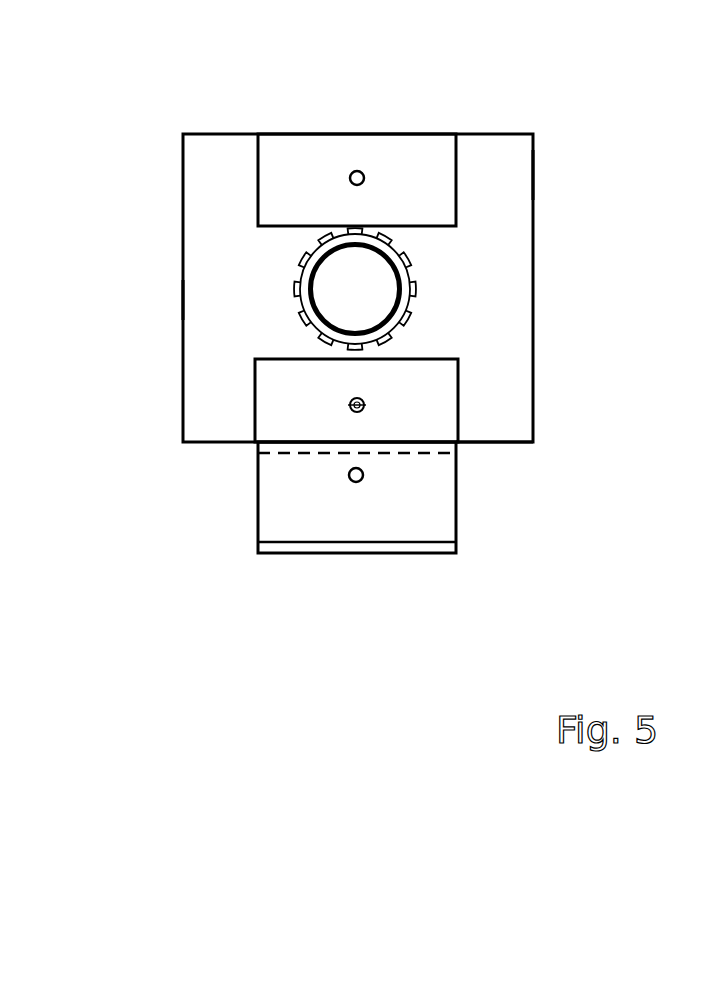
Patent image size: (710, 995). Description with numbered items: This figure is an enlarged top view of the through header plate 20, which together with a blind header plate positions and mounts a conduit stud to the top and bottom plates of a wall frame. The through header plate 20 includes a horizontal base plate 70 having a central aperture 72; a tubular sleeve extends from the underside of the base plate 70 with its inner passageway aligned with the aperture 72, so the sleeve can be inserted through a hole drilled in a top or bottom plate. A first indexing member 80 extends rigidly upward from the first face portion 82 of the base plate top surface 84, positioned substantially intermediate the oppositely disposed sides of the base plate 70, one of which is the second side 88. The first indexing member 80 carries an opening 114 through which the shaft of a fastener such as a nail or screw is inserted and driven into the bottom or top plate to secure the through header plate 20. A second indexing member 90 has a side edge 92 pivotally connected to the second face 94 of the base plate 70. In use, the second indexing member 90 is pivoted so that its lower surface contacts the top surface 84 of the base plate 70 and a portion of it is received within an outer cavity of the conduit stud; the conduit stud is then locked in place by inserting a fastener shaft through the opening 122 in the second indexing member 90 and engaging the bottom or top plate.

The through header plate 20 is at (582, 108).
The base plate 70 is at (533, 295).
The central aperture 72 is at (372, 304).
The first indexing member 80 is at (335, 152).
The first face portion 82 is at (534, 172).
The top surface 84 is at (183, 300).
The second side 88 is at (533, 372).
The second indexing member 90 is at (457, 497).
The side edge 92 is at (295, 455).
The second face 94 is at (496, 443).
The opening 114 is at (364, 176).
The opening 122 is at (364, 476).